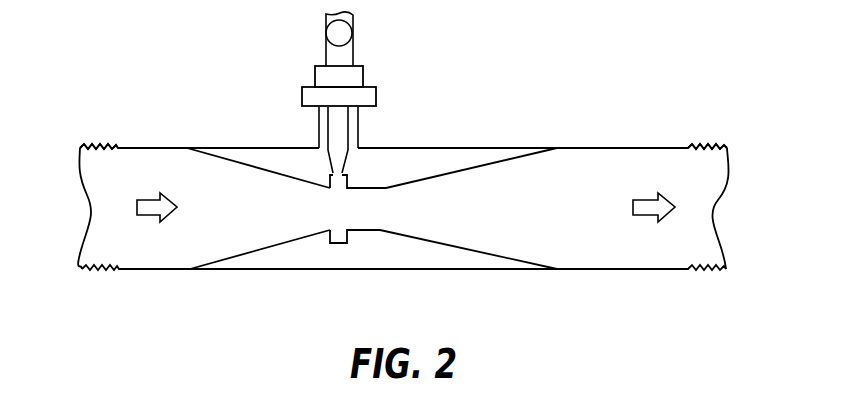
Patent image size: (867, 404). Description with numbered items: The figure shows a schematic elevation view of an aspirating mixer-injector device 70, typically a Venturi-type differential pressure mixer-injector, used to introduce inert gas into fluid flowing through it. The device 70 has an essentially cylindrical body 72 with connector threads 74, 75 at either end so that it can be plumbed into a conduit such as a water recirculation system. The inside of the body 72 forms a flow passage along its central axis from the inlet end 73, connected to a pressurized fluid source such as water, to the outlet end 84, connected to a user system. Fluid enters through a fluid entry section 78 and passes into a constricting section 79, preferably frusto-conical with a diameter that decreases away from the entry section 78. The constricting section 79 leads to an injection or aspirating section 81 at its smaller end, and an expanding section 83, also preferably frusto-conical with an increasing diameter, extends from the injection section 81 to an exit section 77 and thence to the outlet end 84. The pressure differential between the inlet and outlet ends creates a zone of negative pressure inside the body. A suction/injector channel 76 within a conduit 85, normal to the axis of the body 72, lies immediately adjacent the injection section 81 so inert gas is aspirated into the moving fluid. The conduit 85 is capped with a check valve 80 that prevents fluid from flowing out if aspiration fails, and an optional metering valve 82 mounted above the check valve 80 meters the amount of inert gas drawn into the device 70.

The aspirating mixer-injector device 70 is at (232, 303).
The cylindrical body 72 is at (470, 147).
The inlet end 73 is at (83, 213).
The connector threads 74 is at (98, 145).
The connector threads 75 is at (705, 145).
The suction/injector channel 76 is at (338, 128).
The exit section 77 is at (634, 250).
The fluid entry section 78 is at (142, 250).
The constricting section 79 is at (262, 224).
The check valve 80 is at (315, 78).
The injection section 81 is at (340, 210).
The metering valve 82 is at (349, 44).
The expanding section 83 is at (489, 224).
The outlet end 84 is at (725, 190).
The conduit 85 is at (358, 130).